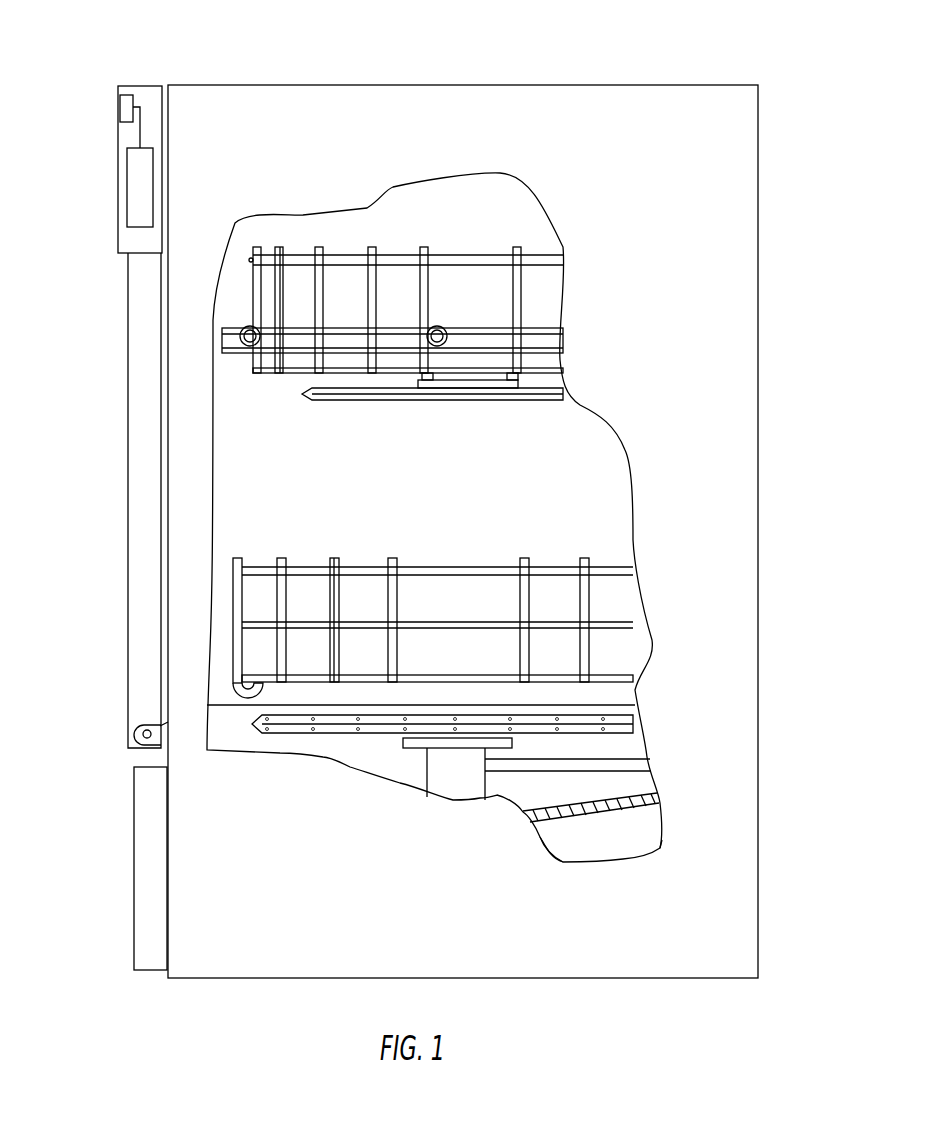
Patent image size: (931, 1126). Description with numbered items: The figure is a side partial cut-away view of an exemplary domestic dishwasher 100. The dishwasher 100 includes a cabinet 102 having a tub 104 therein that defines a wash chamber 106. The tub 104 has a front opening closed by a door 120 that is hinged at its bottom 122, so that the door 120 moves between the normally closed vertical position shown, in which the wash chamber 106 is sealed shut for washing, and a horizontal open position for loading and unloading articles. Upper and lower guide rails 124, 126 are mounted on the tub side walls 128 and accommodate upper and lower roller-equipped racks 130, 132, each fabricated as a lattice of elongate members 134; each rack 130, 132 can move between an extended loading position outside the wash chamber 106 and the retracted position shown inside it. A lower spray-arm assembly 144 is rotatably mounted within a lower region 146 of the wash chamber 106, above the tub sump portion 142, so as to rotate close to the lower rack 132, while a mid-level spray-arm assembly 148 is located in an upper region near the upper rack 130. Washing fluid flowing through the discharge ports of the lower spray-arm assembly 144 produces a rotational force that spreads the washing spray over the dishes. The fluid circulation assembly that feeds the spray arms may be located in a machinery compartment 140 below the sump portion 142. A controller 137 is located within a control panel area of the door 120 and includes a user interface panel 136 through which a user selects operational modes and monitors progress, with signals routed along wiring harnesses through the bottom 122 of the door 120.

The dishwasher 100 is at (650, 62).
The cabinet 102 is at (710, 197).
The tub 104 is at (278, 499).
The wash chamber 106 is at (243, 531).
The door 120 is at (128, 712).
The bottom of door 122 is at (128, 750).
The upper guide rail 124 is at (227, 355).
The lower guide rail 126 is at (222, 708).
The tub side walls 128 is at (308, 228).
The upper rack 130 is at (388, 246).
The lower rack 132 is at (417, 552).
The elongate members 134 is at (278, 374).
The user interface panel 136 is at (132, 108).
The controller 137 is at (145, 196).
The machinery compartment 140 is at (620, 848).
The tub sump portion 142 is at (623, 810).
The lower spray-arm assembly 144 is at (322, 748).
The lower region of wash chamber 146 is at (612, 690).
The mid-level spray-arm assembly 148 is at (402, 422).